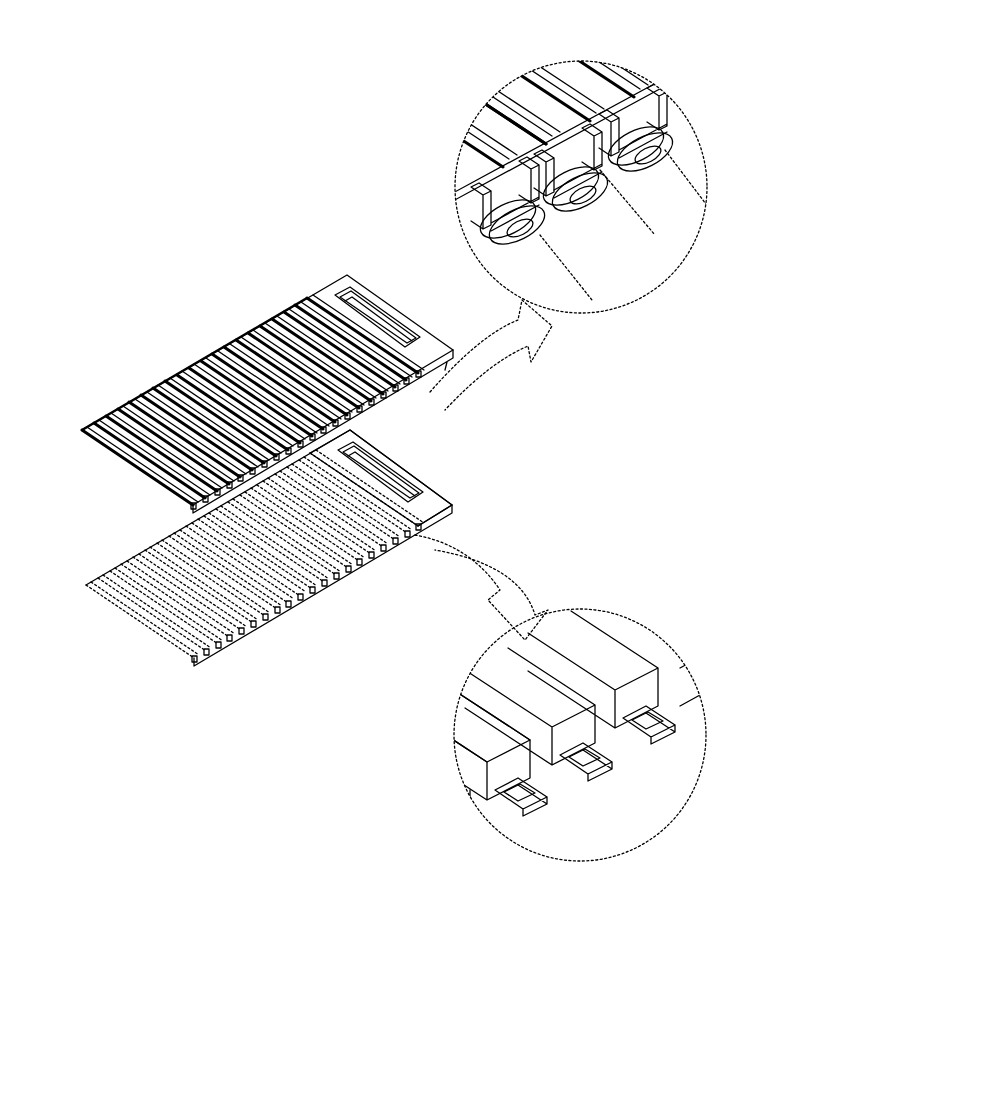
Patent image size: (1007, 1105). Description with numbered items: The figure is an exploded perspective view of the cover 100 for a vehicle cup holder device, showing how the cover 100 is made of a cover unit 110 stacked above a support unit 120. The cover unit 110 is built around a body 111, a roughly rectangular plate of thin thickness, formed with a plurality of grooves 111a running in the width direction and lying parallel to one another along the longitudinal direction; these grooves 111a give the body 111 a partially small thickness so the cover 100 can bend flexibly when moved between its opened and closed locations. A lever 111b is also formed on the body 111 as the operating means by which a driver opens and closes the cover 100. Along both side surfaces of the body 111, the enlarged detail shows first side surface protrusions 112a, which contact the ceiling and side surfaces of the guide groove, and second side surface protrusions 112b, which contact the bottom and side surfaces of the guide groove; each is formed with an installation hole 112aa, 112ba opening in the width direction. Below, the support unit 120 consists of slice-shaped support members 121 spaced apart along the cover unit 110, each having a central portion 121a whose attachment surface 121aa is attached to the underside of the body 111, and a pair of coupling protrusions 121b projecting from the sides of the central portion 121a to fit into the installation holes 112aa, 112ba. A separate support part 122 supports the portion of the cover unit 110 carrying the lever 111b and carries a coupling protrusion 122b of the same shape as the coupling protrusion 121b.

The cover 100 is at (168, 70).
The cover unit 110 is at (193, 331).
The body 111 is at (305, 295).
The grooves 111a is at (528, 92).
The lever 111b is at (370, 292).
The first side surface protrusion 112a is at (490, 270).
The installation hole 112aa is at (565, 200).
The second side surface protrusion 112b is at (665, 172).
The installation hole 112ba is at (660, 160).
The support unit 120 is at (121, 528).
The support member 121 is at (565, 660).
The central portion 121a is at (538, 796).
The attachment surface 121aa is at (508, 672).
The coupling protrusion 121b is at (600, 748).
The support part 122 is at (443, 481).
The coupling protrusion 122b is at (425, 527).